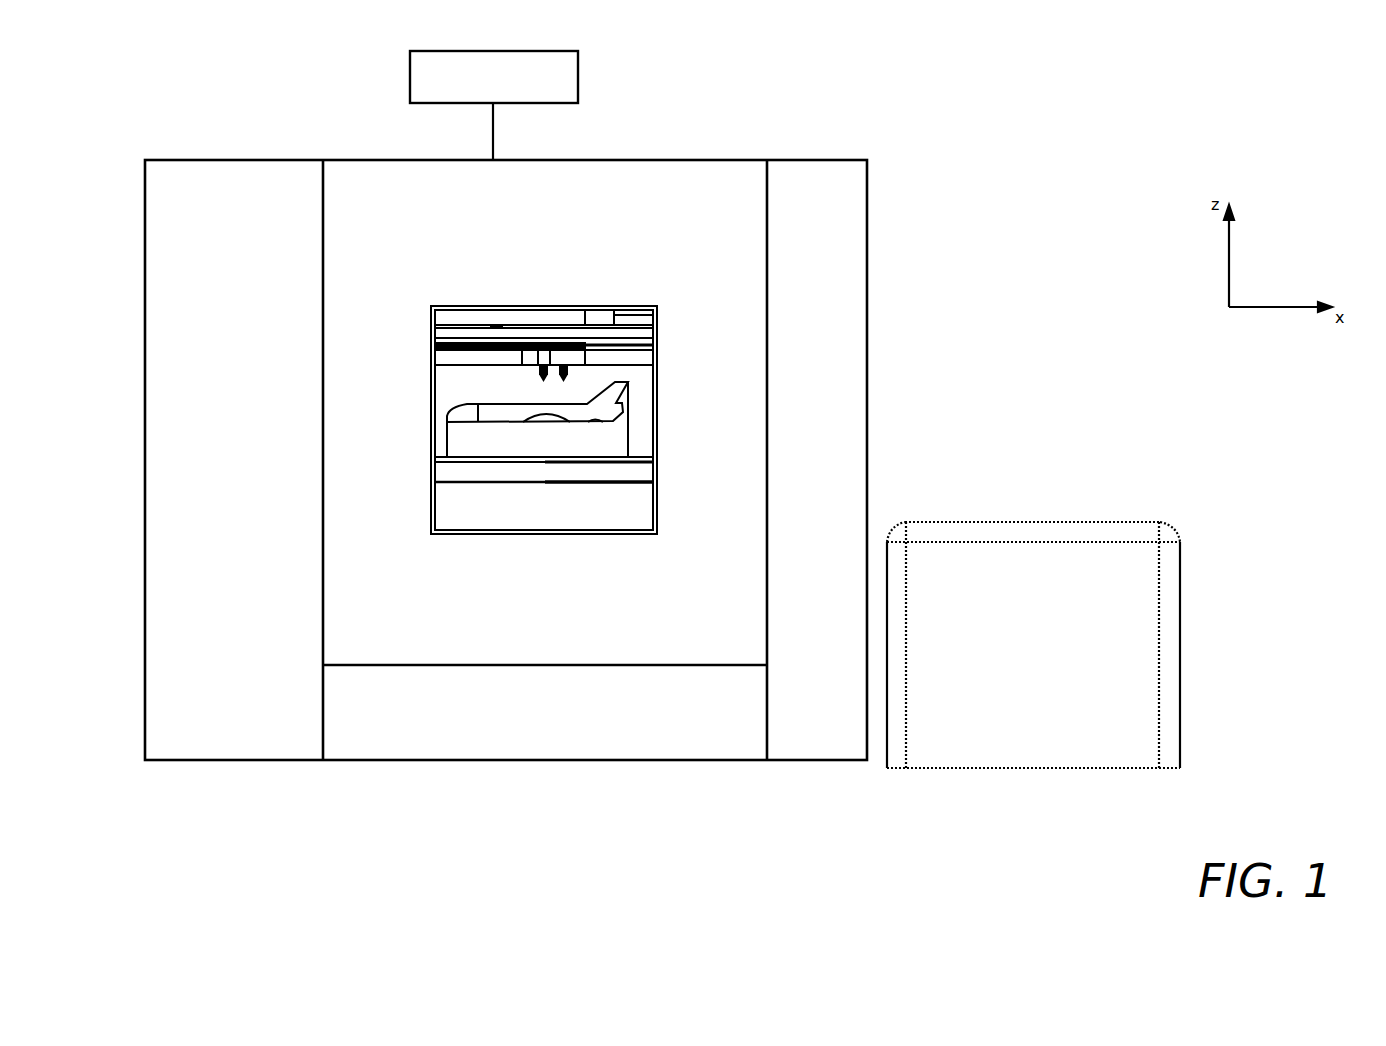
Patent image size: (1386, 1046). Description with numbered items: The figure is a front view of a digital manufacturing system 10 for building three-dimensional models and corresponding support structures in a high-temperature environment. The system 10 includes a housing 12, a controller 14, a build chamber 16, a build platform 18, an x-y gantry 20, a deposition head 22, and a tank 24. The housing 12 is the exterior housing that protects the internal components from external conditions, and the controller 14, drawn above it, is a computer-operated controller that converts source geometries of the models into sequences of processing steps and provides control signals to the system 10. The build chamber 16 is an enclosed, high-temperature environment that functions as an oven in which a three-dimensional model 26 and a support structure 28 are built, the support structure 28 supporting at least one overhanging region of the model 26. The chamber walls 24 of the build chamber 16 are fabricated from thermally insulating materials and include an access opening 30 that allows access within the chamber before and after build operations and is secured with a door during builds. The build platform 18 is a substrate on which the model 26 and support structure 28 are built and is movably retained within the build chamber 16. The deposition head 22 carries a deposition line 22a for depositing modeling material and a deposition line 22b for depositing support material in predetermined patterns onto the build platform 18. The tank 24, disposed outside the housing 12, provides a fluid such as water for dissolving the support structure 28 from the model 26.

The digital manufacturing system 10 is at (1222, 400).
The housing 12 is at (867, 199).
The controller 14 is at (578, 61).
The build chamber 16 is at (790, 258).
The build platform 18 is at (467, 475).
The x-y gantry 20 is at (563, 295).
The deposition head 22 is at (545, 340).
The deposition line 22a is at (537, 372).
The deposition line 22b is at (563, 367).
The tank 24 is at (378, 182).
The 3D model 26 is at (612, 398).
The support structure 28 is at (463, 438).
The access opening 30 is at (663, 503).